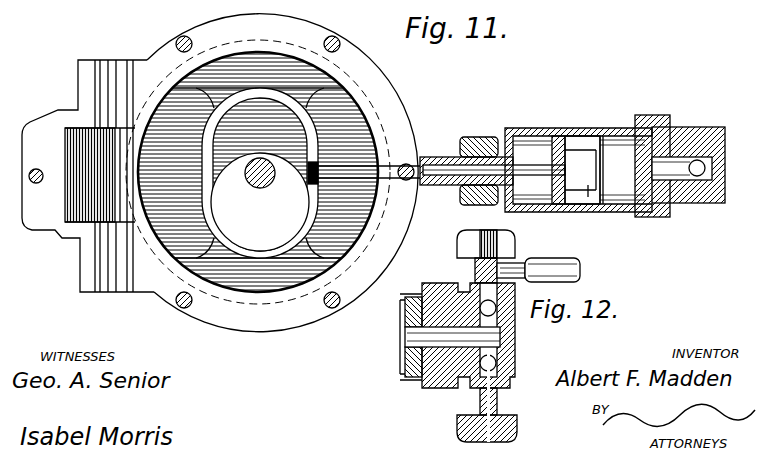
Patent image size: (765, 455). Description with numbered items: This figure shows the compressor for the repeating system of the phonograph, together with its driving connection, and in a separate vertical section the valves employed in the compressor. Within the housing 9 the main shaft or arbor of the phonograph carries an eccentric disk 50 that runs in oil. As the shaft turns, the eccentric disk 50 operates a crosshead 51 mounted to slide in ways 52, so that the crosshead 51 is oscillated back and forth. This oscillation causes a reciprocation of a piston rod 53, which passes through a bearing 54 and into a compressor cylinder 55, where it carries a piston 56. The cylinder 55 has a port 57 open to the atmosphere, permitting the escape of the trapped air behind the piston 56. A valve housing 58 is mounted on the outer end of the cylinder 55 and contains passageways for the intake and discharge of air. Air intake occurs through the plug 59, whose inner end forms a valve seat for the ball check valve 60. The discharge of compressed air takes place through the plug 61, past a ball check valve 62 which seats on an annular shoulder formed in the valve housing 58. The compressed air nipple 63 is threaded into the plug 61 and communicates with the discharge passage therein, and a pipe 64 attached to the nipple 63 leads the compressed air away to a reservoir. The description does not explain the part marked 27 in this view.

In FIG. 11, the housing 9 is at (308, 317).
In FIG. 11, the pipe connection 27 is at (140, 22).
In FIG. 11, the eccentric disk 50 is at (260, 202).
In FIG. 11, the crosshead 51 is at (308, 128).
In FIG. 11, the ways 52 is at (283, 70).
In FIG. 11, the piston rod 53 is at (348, 172).
In FIG. 11, the bearing 54 is at (443, 186).
In FIG. 11, the compressor cylinder 55 is at (545, 128).
In FIG. 11, the piston 56 is at (593, 212).
In FIG. 11, the port 57 is at (514, 134).
In FIG. 12, the port 57 is at (408, 305).
In FIG. 11, the valve housing 58 is at (660, 115).
In FIG. 12, the valve housing 58 is at (425, 385).
In FIG. 12, the plug 59 is at (480, 398).
In FIG. 12, the ball check valve 60 is at (515, 352).
In FIG. 12, the plug 61 is at (462, 247).
In FIG. 12, the ball check valve 62 is at (500, 312).
In FIG. 12, the compressed air nipple 63 is at (517, 268).
In FIG. 12, the pipe 64 is at (566, 262).